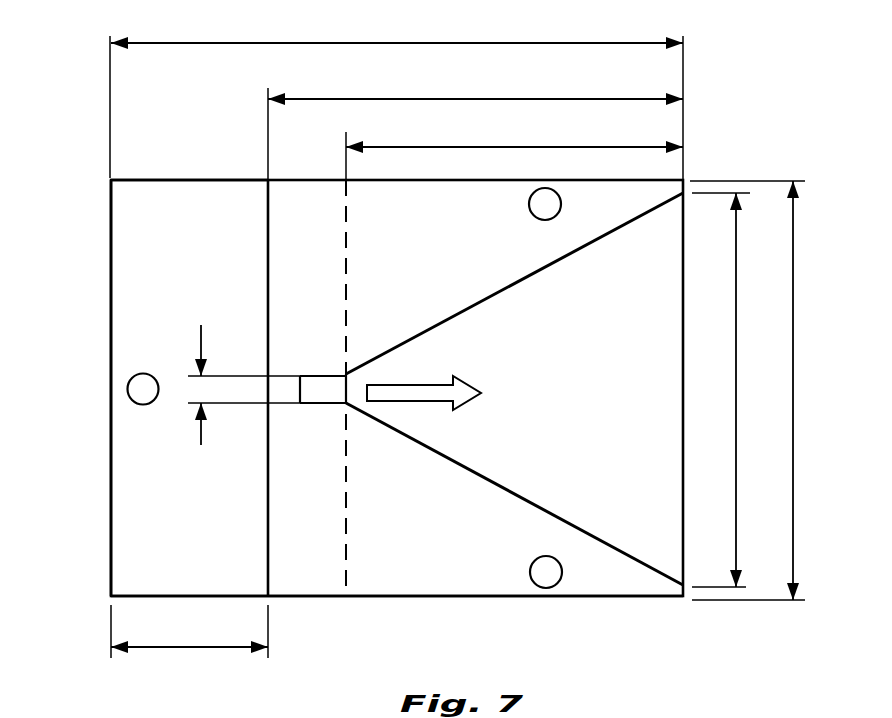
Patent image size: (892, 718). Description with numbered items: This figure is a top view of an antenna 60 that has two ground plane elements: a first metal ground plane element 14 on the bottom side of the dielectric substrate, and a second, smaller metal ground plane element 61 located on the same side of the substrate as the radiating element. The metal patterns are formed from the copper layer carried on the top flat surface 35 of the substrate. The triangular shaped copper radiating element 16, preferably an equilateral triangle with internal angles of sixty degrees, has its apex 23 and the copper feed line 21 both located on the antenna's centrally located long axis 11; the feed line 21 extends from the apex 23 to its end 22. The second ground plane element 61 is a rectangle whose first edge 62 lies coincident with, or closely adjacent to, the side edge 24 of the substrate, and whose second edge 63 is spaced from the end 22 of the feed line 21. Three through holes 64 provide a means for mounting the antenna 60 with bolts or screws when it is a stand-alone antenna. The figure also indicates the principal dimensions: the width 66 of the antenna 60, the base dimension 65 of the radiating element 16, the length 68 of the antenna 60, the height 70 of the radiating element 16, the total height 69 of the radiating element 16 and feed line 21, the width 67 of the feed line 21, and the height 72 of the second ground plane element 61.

The antenna 60 is at (62, 76).
The second metal ground plane element 61 is at (138, 503).
The first edge 62 is at (110, 340).
The second side edge 24 is at (110, 212).
The second edge 63 is at (270, 283).
The first metal ground plane element 14 is at (347, 493).
The radiating element 16 is at (655, 253).
The top flat surface 35 is at (472, 571).
The feed line 21 is at (300, 377).
The end 22 is at (301, 404).
The apex 23 is at (352, 388).
The long axis 11 is at (427, 383).
The through holes 64 is at (127, 386).
The length 68 is at (400, 43).
The total height 69 is at (473, 99).
The height 70 is at (528, 147).
The height 72 is at (183, 648).
The dimension 65 is at (737, 398).
The width 66 is at (794, 375).
The width 67 is at (202, 388).